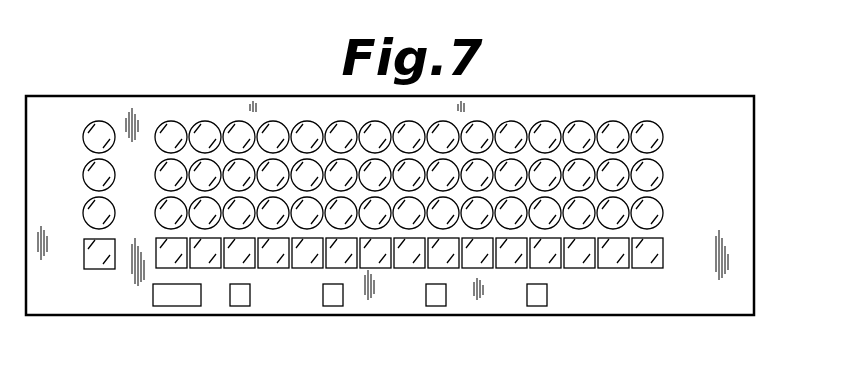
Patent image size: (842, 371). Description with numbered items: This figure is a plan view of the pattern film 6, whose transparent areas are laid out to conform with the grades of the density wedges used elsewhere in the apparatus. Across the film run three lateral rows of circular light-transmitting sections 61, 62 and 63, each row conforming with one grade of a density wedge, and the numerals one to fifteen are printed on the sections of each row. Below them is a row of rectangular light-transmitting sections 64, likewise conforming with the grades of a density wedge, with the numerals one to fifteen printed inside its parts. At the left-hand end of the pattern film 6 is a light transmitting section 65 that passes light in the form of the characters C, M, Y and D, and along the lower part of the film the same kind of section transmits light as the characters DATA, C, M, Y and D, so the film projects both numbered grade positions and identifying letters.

The pattern film 6 is at (568, 102).
The circular light-transmitting section 61 is at (647, 121).
The circular light-transmitting section 62 is at (662, 168).
The circular light-transmitting section 63 is at (661, 219).
The rectangular light-transmitting section 64 is at (651, 268).
The light transmitting section 65 is at (84, 171).